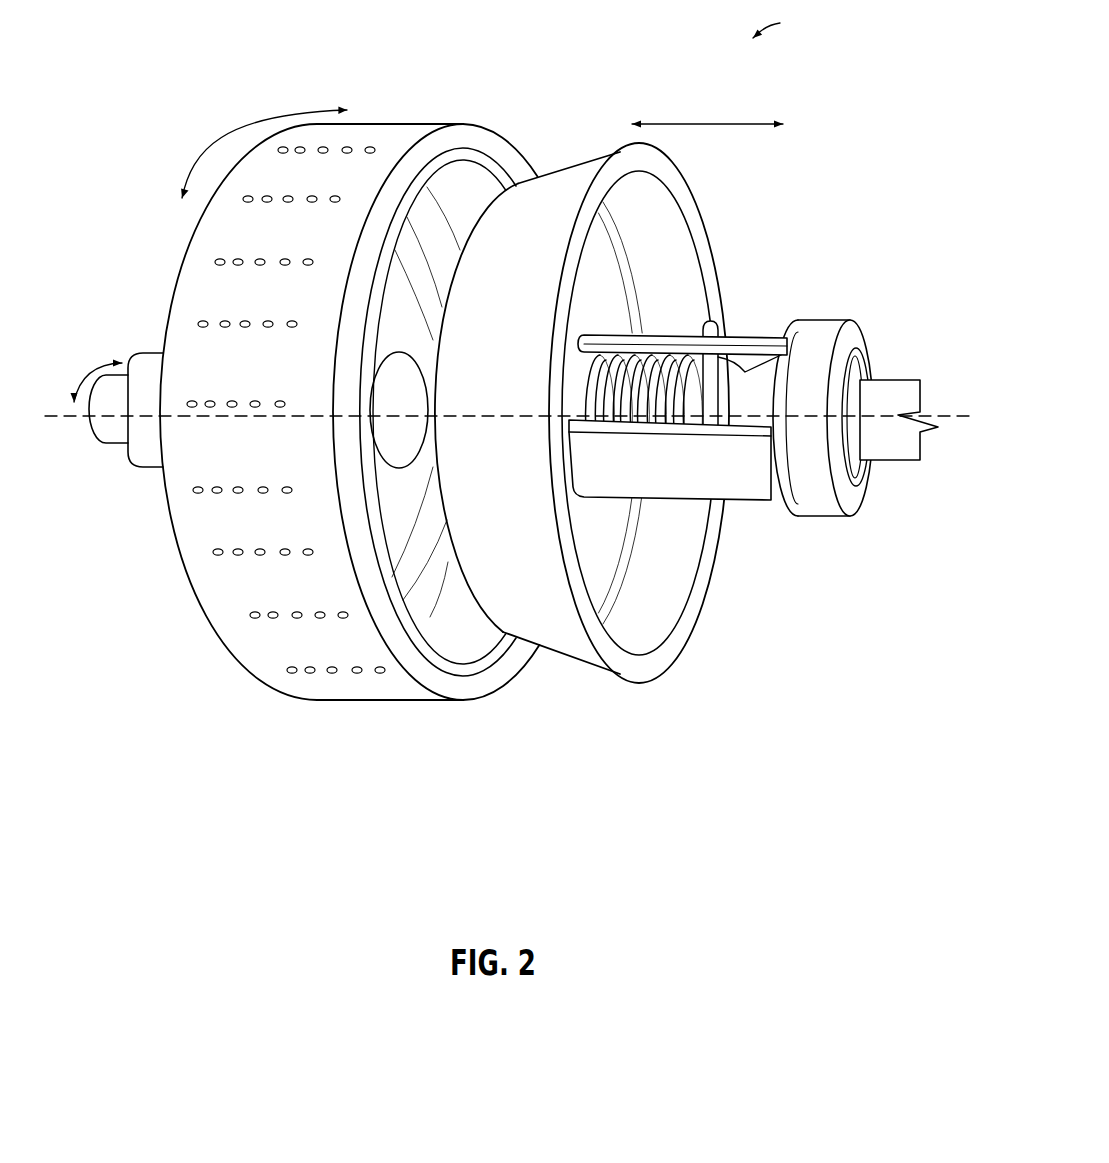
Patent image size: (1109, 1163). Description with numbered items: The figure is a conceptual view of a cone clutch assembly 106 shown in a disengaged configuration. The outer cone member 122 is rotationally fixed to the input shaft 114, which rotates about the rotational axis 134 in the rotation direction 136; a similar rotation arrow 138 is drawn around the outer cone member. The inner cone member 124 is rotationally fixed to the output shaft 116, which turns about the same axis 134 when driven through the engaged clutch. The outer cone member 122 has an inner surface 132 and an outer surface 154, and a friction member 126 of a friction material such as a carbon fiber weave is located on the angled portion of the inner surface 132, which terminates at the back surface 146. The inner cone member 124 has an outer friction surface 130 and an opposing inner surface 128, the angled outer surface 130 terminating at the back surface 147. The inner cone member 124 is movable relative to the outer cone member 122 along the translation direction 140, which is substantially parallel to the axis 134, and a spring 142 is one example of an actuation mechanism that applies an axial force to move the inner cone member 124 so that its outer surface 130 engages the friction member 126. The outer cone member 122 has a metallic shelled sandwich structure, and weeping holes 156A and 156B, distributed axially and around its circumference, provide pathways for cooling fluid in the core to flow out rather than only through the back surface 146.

The cone clutch assembly 106 is at (791, 28).
The input shaft 114 is at (111, 436).
The output shaft 116 is at (883, 393).
The outer cone member 122 is at (273, 688).
The inner cone member 124 is at (553, 192).
The friction member 126 is at (502, 165).
The inner surface 128 is at (657, 607).
The outer surface 130 is at (548, 632).
The inner surface 132 is at (420, 613).
The rotational axis 134 is at (63, 413).
The direction of rotation 136 is at (96, 364).
The drum rotation direction 138 is at (218, 141).
The translation direction 140 is at (707, 118).
The spring 142 is at (700, 357).
The back surface 146 is at (488, 680).
The back surface 147 is at (657, 660).
The outer surface 154 is at (235, 592).
The weeping hole 156A is at (203, 320).
The weeping hole 156B is at (226, 322).